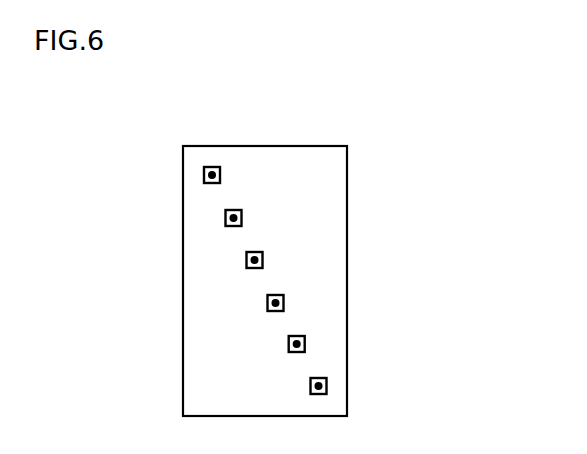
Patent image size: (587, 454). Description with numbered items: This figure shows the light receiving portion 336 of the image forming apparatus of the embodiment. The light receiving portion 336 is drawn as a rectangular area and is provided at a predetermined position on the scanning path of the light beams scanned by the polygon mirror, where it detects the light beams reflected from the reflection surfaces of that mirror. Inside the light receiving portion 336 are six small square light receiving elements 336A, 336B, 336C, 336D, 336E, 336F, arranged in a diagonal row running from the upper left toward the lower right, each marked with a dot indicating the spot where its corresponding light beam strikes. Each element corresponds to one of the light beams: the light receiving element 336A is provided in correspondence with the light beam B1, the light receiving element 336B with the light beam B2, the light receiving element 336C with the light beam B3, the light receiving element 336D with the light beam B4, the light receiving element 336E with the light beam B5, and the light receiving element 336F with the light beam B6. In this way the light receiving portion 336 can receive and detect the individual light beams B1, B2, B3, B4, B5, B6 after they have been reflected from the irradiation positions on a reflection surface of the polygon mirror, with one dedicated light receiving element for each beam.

The light receiving portion 336 is at (176, 124).
The light receiving element 336A is at (221, 175).
The light receiving element 336B is at (242, 218).
The light receiving element 336C is at (263, 260).
The light receiving element 336D is at (284, 303).
The light receiving element 336E is at (305, 344).
The light receiving element 336F is at (327, 386).
The light beam B1 is at (206, 184).
The light beam B2 is at (227, 227).
The light beam B3 is at (249, 269).
The light beam B4 is at (270, 312).
The light beam B5 is at (291, 353).
The light beam B6 is at (310, 394).